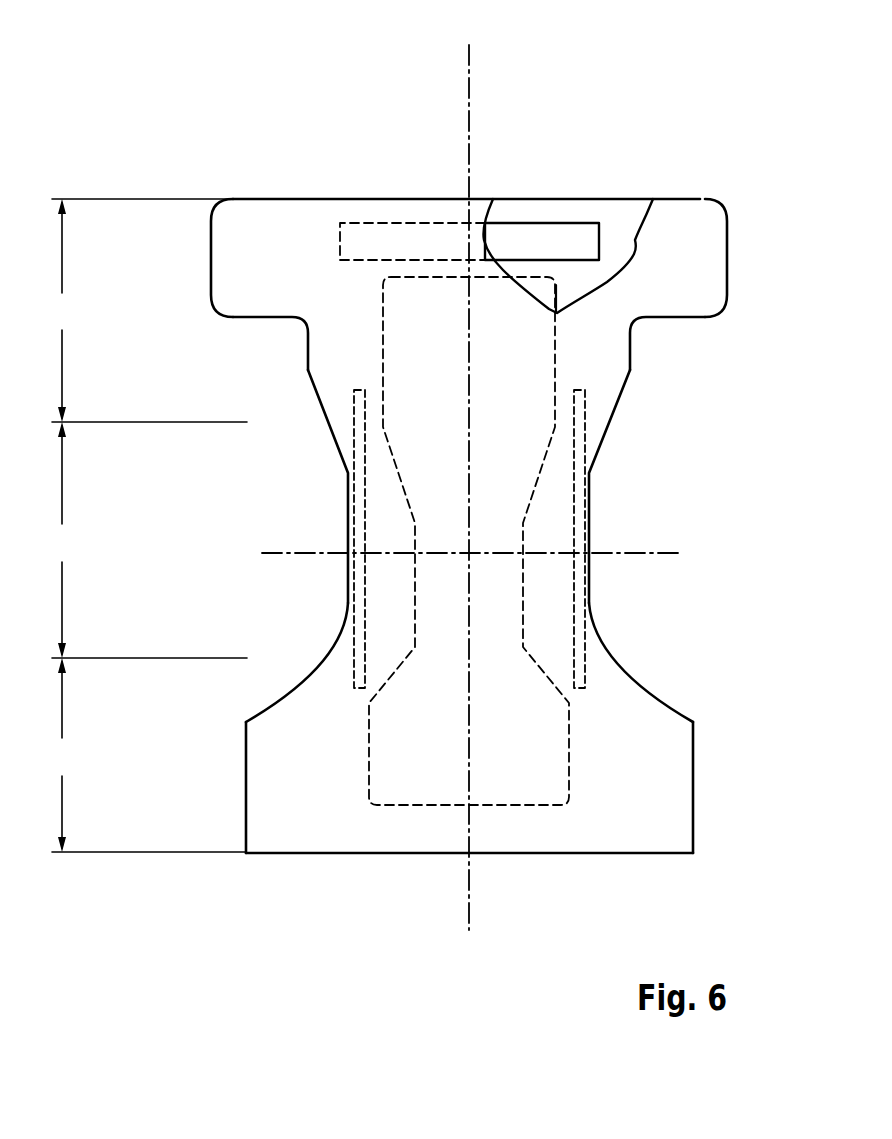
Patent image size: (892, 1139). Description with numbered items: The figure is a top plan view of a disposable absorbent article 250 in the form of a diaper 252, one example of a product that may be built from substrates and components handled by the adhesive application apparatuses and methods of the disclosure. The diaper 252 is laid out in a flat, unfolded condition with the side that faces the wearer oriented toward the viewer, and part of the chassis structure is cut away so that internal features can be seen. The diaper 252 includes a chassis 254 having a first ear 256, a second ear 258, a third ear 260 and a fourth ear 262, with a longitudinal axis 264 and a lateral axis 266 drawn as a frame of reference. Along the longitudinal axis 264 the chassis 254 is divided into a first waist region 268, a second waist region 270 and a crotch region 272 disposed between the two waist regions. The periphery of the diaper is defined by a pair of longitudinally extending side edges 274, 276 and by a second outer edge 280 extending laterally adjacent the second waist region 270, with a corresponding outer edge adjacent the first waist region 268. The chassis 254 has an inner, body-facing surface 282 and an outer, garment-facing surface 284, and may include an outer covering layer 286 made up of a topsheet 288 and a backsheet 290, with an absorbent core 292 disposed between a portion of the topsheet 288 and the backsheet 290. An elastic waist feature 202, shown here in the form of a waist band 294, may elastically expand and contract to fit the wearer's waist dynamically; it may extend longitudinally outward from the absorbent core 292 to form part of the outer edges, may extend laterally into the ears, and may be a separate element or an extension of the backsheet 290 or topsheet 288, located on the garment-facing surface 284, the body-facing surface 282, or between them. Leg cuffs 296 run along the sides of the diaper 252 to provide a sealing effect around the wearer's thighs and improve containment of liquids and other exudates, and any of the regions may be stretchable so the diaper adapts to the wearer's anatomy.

The elastic waist feature 202 is at (514, 245).
The disposable absorbent article 250 is at (560, 160).
The diaper 252 is at (296, 131).
The chassis 254 is at (287, 223).
The first ear 256 is at (662, 300).
The second ear 258 is at (233, 260).
The third ear 260 is at (648, 755).
The fourth ear 262 is at (298, 795).
The longitudinal axis 264 is at (469, 507).
The lateral axis 266 is at (491, 556).
The first waist region 268 is at (145, 310).
The second waist region 270 is at (144, 755).
The crotch region 272 is at (145, 540).
The longitudinally extending side edge 274 is at (618, 410).
The longitudinally extending side edge 276 is at (308, 372).
The second outer edge 280 is at (415, 853).
The inner, body-facing surface 282 is at (245, 298).
The outer, garment-facing surface 284 is at (629, 215).
The outer covering layer 286 is at (626, 698).
The topsheet 288 is at (316, 710).
The backsheet 290 is at (595, 215).
The absorbent core 292 is at (543, 295).
The waist band 294 is at (428, 236).
The leg cuffs 296 is at (352, 513).